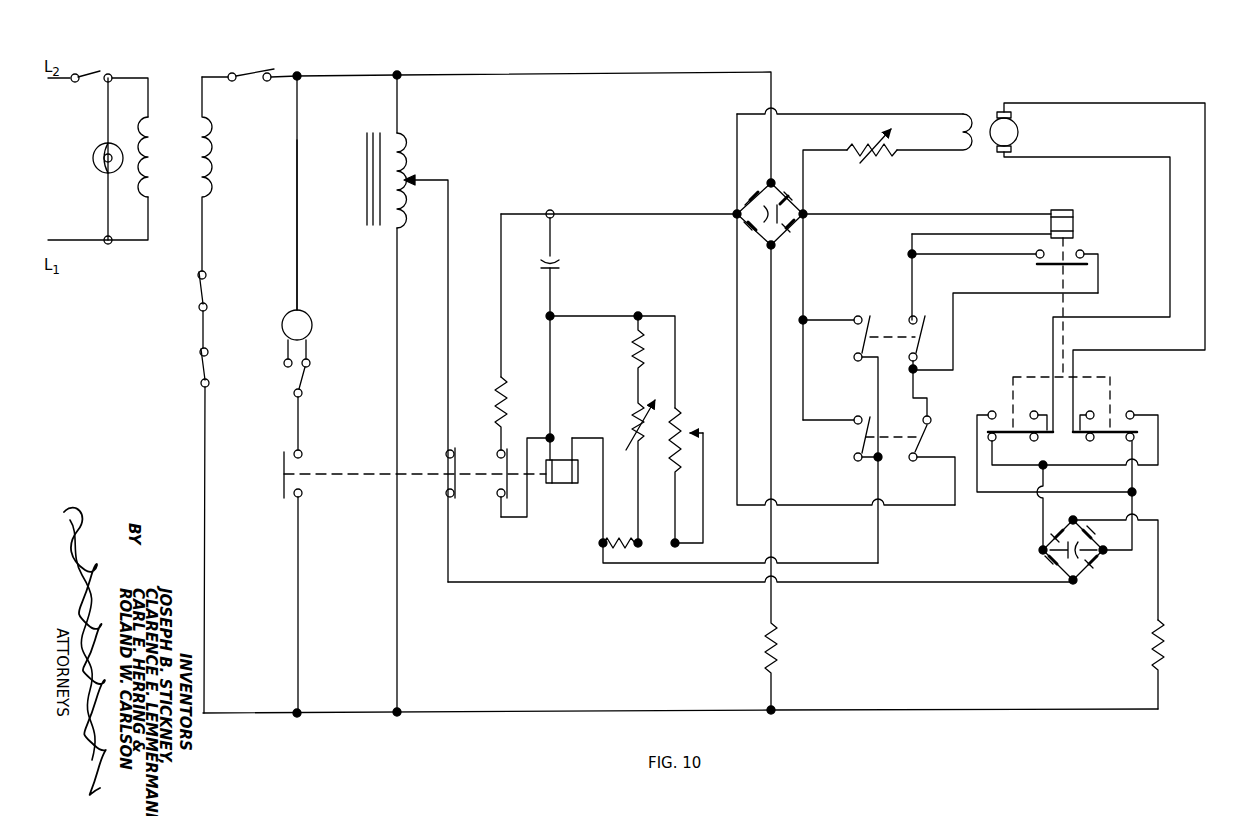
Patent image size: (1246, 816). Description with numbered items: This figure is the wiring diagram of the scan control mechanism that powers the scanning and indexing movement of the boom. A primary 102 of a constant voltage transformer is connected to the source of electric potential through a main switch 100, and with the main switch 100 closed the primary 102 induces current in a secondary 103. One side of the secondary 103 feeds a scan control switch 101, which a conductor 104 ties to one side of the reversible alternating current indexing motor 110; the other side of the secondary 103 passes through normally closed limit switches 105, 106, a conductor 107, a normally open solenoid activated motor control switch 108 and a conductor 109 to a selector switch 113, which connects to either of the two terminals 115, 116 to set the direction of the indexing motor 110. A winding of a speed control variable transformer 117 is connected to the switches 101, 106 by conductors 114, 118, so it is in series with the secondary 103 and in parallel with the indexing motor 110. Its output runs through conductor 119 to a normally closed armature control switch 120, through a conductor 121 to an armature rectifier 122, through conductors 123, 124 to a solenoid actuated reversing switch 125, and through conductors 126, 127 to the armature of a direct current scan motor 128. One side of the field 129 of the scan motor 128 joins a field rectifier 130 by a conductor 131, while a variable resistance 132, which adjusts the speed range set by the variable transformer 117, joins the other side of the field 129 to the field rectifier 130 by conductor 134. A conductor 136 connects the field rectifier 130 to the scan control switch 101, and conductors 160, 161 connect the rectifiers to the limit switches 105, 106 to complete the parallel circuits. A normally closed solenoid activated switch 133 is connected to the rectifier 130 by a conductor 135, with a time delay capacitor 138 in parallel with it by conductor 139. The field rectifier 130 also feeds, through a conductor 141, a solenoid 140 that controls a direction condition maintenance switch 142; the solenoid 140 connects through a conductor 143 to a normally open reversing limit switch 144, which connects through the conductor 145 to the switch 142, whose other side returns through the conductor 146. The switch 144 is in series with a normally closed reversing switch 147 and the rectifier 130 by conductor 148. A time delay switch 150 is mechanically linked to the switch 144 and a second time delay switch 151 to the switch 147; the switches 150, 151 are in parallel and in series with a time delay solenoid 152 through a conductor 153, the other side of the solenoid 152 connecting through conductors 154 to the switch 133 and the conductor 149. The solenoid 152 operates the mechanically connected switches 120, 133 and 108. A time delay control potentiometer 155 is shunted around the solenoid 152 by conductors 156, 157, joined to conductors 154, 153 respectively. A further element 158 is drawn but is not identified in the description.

The main switch 100 is at (88, 73).
The scan control switch 101 is at (272, 72).
The primary 102 is at (150, 122).
The secondary 103 is at (211, 150).
The conductor 104 is at (297, 268).
The limit switch 105 is at (198, 292).
The limit switch 106 is at (200, 356).
The conductor 107 is at (203, 452).
The motor control switch 108 is at (283, 459).
The conductor 109 is at (297, 417).
The indexing motor 110 is at (300, 312).
The selector switch 113 is at (305, 385).
The conductor 114 is at (397, 108).
The terminal 115 is at (288, 350).
The terminal 116 is at (310, 350).
The speed control variable transformer 117 is at (405, 145).
The conductor 118 is at (398, 668).
The conductor 119 is at (448, 190).
The armature control switch 120 is at (458, 487).
The conductor 121 is at (992, 584).
The armature rectifier 122 is at (1078, 581).
The conductor 123 is at (1040, 517).
The conductor 124 is at (1112, 550).
The reversing switch 125 is at (1120, 398).
The conductor 126 is at (1138, 132).
The conductor 127 is at (1090, 103).
The scan motor 128 is at (978, 104).
The field 129 is at (956, 112).
The field rectifier 130 is at (757, 186).
The conductor 131 is at (828, 112).
The variable resistance 132 is at (878, 158).
The solenoid activated control switch 133 is at (498, 458).
The conductor 134 is at (806, 150).
The conductor 135 is at (500, 268).
The conductor 136 is at (655, 72).
The time delay capacitor 138 is at (560, 265).
The conductor 139 is at (552, 240).
The solenoid 140 is at (1075, 220).
The conductor 141 is at (1022, 212).
The direction condition maintenance switch 142 is at (1085, 250).
The conductor 143 is at (912, 234).
The reversing limit switch 144 is at (910, 323).
The conductor 145 is at (1018, 255).
The conductor 146 is at (1023, 293).
The reversing switch 147 is at (925, 423).
The conductor 148 is at (913, 372).
The conductor 149 is at (552, 305).
The time delay switch 150 is at (860, 340).
The second time delay switch 151 is at (860, 443).
The time delay solenoid 152 is at (558, 485).
The conductor 153 is at (878, 388).
The conductor 154 is at (555, 445).
The time delay control potentiometer 155 is at (680, 410).
The conductor 156 is at (675, 332).
The conductor 157 is at (660, 546).
The conductor 158 is at (922, 505).
The conductor 160 is at (1162, 680).
The conductor 161 is at (775, 682).